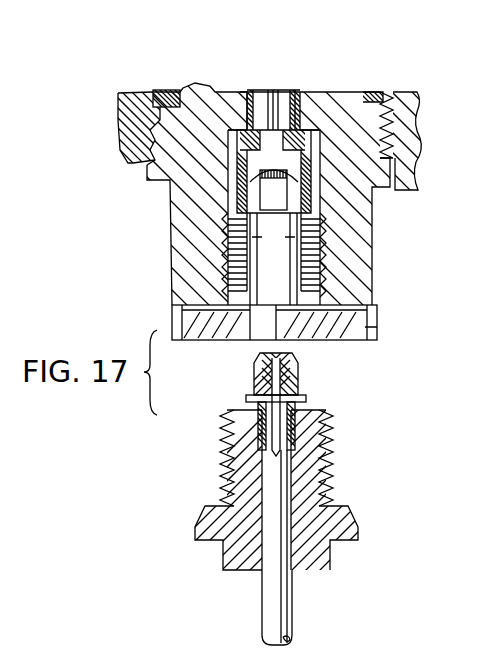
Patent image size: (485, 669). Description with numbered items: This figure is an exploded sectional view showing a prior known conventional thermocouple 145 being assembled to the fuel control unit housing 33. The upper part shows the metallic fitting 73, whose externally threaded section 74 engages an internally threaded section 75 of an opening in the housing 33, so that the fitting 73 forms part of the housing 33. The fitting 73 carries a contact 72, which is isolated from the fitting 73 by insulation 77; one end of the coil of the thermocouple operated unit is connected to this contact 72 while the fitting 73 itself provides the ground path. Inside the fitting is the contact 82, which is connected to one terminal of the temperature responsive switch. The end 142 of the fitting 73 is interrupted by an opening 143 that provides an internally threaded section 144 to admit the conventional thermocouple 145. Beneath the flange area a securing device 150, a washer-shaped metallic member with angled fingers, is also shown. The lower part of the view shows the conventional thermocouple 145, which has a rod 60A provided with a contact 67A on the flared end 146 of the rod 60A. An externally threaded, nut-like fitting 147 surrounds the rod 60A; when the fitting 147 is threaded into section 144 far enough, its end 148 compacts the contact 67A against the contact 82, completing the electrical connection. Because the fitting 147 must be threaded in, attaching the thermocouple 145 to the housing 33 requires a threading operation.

The housing 33 is at (407, 123).
The contact 72 is at (272, 90).
The metallic fitting 73 is at (170, 172).
The externally threaded section 74 is at (155, 143).
The internally threaded section 75 is at (178, 108).
The insulation 77 is at (250, 90).
The contact 82 is at (260, 192).
The end 142 is at (352, 322).
The opening 143 is at (320, 255).
The internally threaded section 144 is at (230, 230).
The conventional thermocouple 145 is at (226, 463).
The flared end 146 is at (300, 400).
The nut-like fitting 147 is at (327, 475).
The end 148 is at (238, 408).
The securing device 150 is at (340, 338).
The rod 60A is at (262, 592).
The contact 67A is at (297, 380).